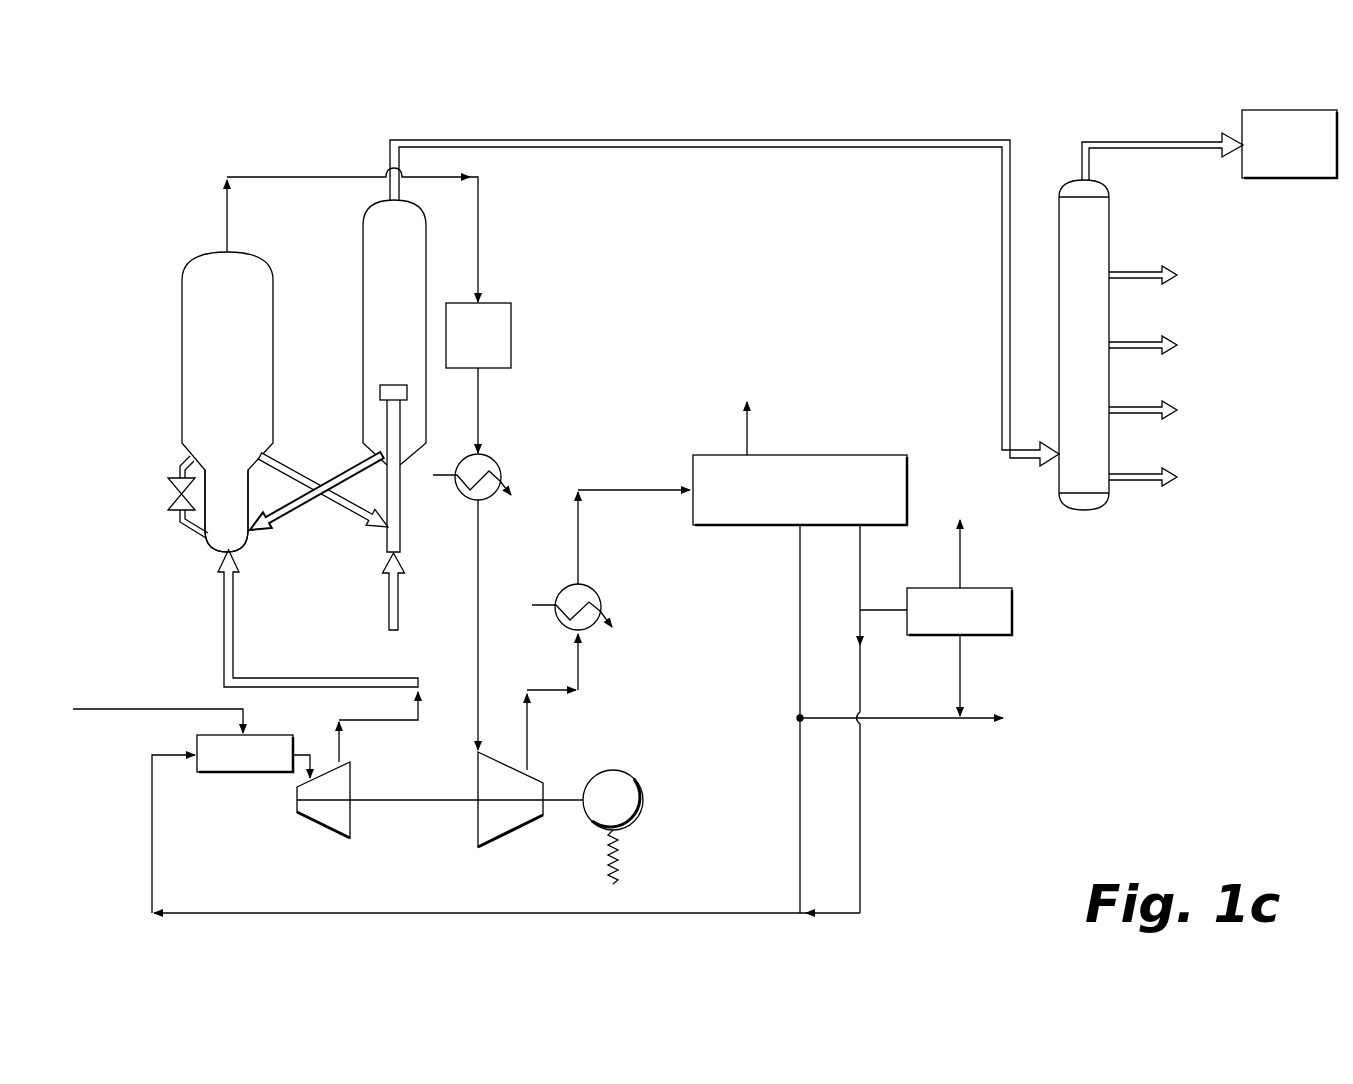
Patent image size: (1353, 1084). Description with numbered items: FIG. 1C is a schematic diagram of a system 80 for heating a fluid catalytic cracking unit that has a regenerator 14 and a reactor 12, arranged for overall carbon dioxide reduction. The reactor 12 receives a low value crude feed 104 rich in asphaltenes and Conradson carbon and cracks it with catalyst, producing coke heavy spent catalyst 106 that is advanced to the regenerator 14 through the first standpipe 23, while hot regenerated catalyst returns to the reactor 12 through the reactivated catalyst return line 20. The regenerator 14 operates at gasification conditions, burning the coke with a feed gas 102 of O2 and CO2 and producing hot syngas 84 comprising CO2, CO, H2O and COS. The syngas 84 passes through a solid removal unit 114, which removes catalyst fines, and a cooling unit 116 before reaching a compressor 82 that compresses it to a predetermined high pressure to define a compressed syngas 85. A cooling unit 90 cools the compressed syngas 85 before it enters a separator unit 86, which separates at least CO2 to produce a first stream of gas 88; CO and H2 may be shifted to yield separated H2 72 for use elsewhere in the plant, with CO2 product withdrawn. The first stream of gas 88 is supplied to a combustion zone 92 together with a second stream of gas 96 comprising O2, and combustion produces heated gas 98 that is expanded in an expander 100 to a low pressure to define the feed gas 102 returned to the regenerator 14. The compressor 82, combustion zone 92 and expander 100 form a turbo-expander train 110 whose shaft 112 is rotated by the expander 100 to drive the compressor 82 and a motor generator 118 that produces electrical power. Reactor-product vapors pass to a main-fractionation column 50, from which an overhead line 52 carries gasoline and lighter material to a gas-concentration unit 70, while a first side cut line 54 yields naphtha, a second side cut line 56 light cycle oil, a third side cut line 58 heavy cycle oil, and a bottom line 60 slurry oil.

The system for heating a fluid catalytic cracking unit 80 is at (140, 210).
The regenerator 14 is at (220, 402).
The reactor 12 is at (394, 376).
The reactivated catalyst return line 20 is at (296, 466).
The first standpipe 23 is at (347, 468).
The coke heavy spent catalyst 106 is at (235, 537).
The low value crude feed 104 is at (398, 598).
The feed gas 102 is at (224, 623).
The syngas 84 is at (228, 221).
The solid removal unit 114 is at (512, 333).
The cooling unit 116 is at (503, 478).
The separator unit 86 is at (868, 424).
The separated H2 72 is at (960, 560).
The overhead line 52 is at (1079, 162).
The gas-concentration unit 70 is at (1289, 144).
The main-fractionation column 50 is at (1084, 345).
The first side cut line 54 is at (1164, 276).
The second side cut line 56 is at (1164, 346).
The third side cut line 58 is at (1164, 411).
The bottom line 60 is at (1164, 478).
The second stream of gas 96 is at (172, 709).
The combustion zone 92 is at (245, 753).
The heated gas 98 is at (301, 752).
The shaft 112 is at (418, 797).
The expander 100 is at (323, 827).
The turbo-expander train 110 is at (437, 835).
The compressor 82 is at (515, 832).
The motor generator 118 is at (644, 800).
The compressed syngas 85 is at (583, 671).
The cooling unit 90 is at (603, 606).
The first stream of gas 88 is at (712, 911).